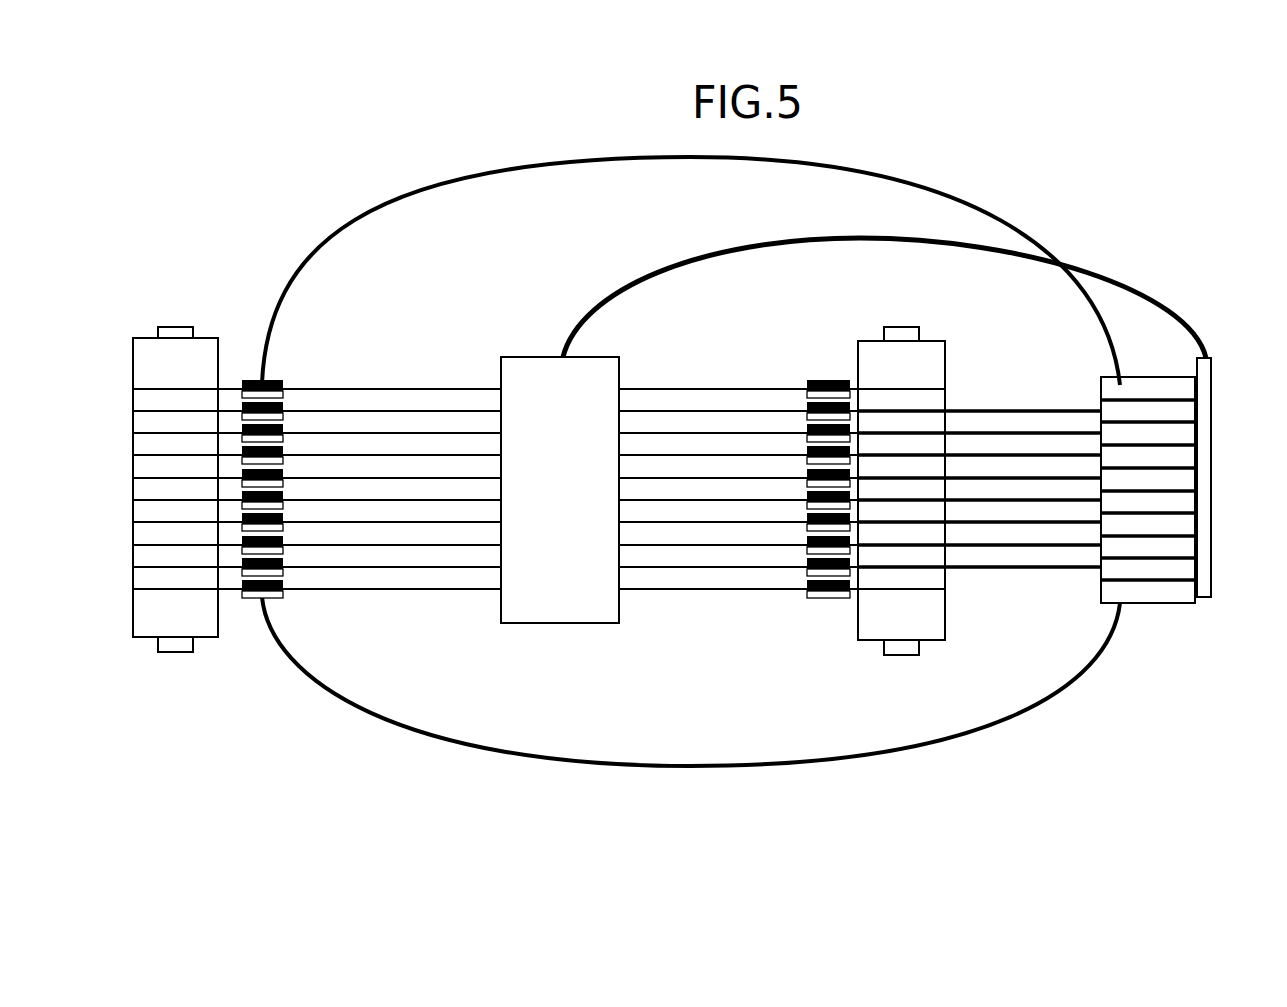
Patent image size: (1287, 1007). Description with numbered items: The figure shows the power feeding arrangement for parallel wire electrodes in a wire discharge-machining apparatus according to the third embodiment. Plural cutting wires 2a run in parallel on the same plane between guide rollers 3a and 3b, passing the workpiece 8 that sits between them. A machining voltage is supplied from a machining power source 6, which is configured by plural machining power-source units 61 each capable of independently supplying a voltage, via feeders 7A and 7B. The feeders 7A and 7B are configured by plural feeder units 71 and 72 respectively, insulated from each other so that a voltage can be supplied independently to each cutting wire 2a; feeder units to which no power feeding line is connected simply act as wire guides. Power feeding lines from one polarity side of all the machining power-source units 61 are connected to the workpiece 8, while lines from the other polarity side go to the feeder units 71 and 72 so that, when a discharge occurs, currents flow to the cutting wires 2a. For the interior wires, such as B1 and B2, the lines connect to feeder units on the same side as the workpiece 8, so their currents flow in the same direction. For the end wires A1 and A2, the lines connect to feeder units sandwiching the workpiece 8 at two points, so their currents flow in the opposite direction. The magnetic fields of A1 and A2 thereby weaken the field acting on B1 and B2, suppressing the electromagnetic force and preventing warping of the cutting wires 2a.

The cutting wire 2a is at (403, 432).
The guide roller 3a is at (150, 622).
The guide roller 3b is at (875, 625).
The machining power source 6 is at (1222, 360).
The machining power-source unit 61 is at (1158, 605).
The feeder 7A is at (252, 603).
The feeder 7B is at (825, 603).
The feeder unit 71 is at (283, 572).
The feeder unit 72 is at (807, 572).
The workpiece 8 is at (560, 614).
The cutting wire A1 is at (161, 391).
The cutting wire B1 is at (161, 406).
The cutting wire B2 is at (161, 568).
The cutting wire A2 is at (161, 579).